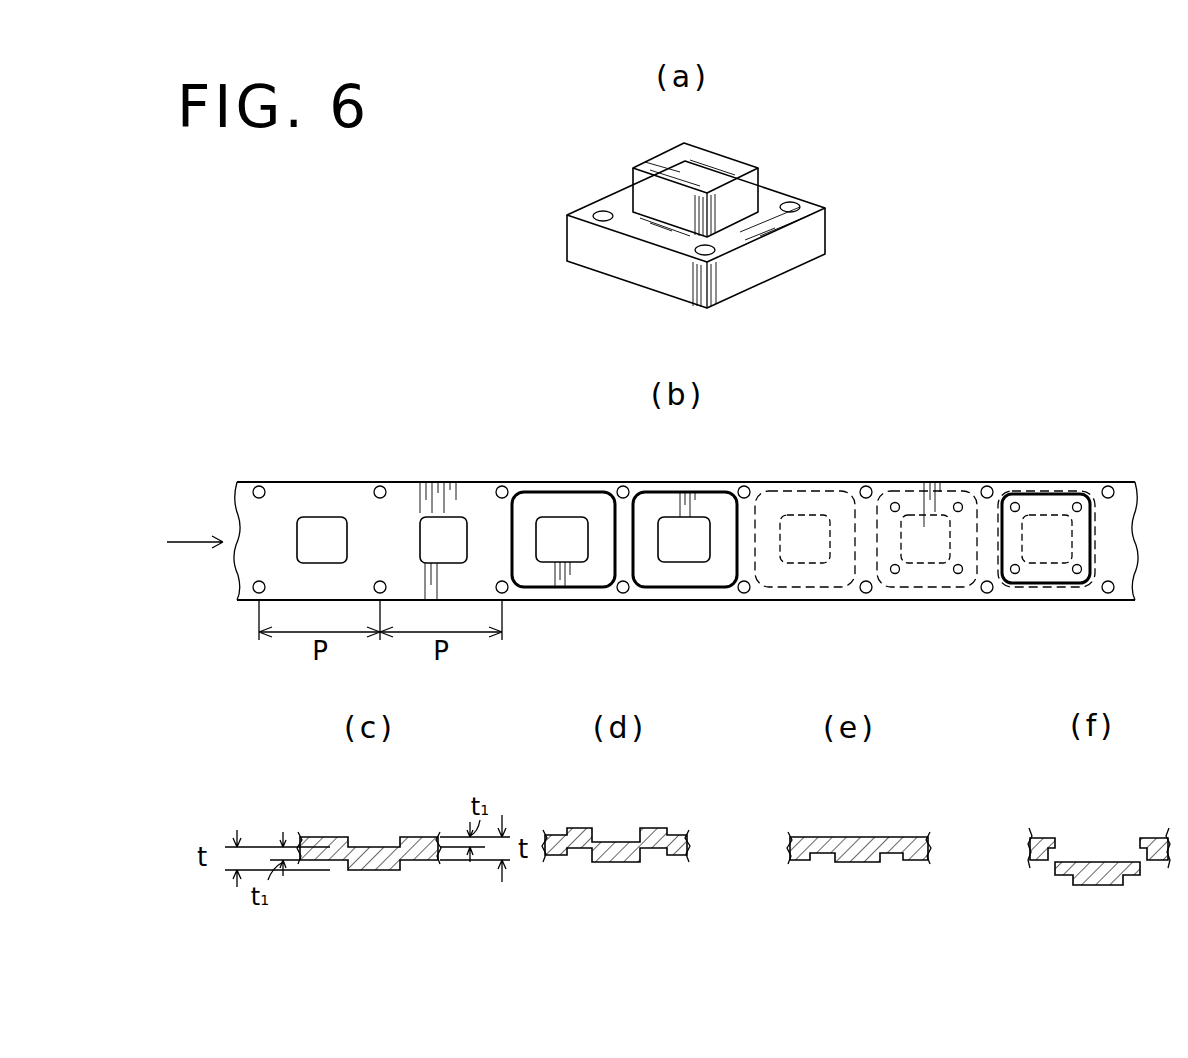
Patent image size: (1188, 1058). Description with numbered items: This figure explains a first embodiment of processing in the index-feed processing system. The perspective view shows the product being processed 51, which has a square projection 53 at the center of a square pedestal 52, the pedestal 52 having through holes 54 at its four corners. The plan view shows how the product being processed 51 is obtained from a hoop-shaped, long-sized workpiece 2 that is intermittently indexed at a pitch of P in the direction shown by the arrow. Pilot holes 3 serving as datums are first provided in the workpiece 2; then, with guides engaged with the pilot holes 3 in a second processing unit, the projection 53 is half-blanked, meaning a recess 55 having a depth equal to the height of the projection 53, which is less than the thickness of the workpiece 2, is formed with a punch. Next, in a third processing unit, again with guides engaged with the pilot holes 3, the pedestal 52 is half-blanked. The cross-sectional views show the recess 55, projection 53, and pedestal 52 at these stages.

The workpiece 2 is at (297, 492).
The pilot holes 3 is at (386, 489).
The product being processed 51 is at (805, 181).
The pedestal 52 is at (803, 247).
The projection 53 is at (731, 165).
The through holes 54 is at (601, 212).
The recess 55 is at (330, 522).